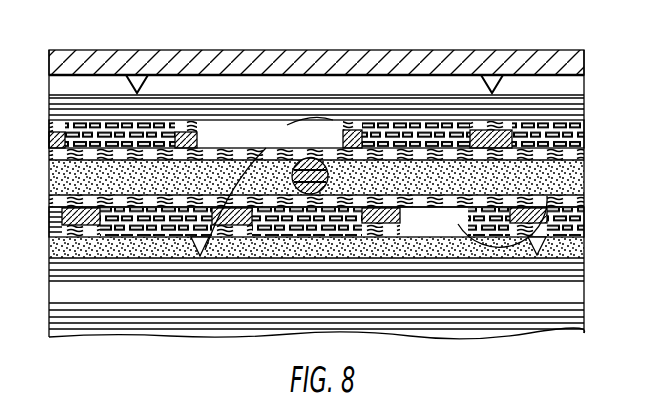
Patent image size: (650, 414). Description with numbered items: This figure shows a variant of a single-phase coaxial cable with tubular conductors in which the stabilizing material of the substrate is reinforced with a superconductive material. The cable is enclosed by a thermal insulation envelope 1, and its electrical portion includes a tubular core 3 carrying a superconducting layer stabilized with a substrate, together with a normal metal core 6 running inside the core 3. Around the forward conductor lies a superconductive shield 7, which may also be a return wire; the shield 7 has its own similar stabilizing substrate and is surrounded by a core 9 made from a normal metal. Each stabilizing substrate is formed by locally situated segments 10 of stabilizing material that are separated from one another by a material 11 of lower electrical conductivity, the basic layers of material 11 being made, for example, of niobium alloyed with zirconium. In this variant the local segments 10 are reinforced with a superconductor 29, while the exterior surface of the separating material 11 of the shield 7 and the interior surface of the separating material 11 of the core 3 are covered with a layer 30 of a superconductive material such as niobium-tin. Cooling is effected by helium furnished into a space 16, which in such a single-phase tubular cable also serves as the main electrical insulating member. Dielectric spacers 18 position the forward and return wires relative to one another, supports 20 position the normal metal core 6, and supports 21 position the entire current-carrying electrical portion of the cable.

The thermal insulation envelope 1 is at (80, 56).
The core 3 is at (425, 226).
The normal metal core 6 is at (242, 316).
The superconductive shield 7 is at (213, 128).
The core 9 is at (263, 105).
The segments 10 is at (112, 132).
The material 11 is at (52, 210).
The space 16 is at (553, 181).
The dielectric spacers 18 is at (315, 158).
The supports 20 is at (546, 240).
The supports 21 is at (492, 73).
The superconductor 29 is at (269, 183).
The layer of a superconductive material 30 is at (483, 124).